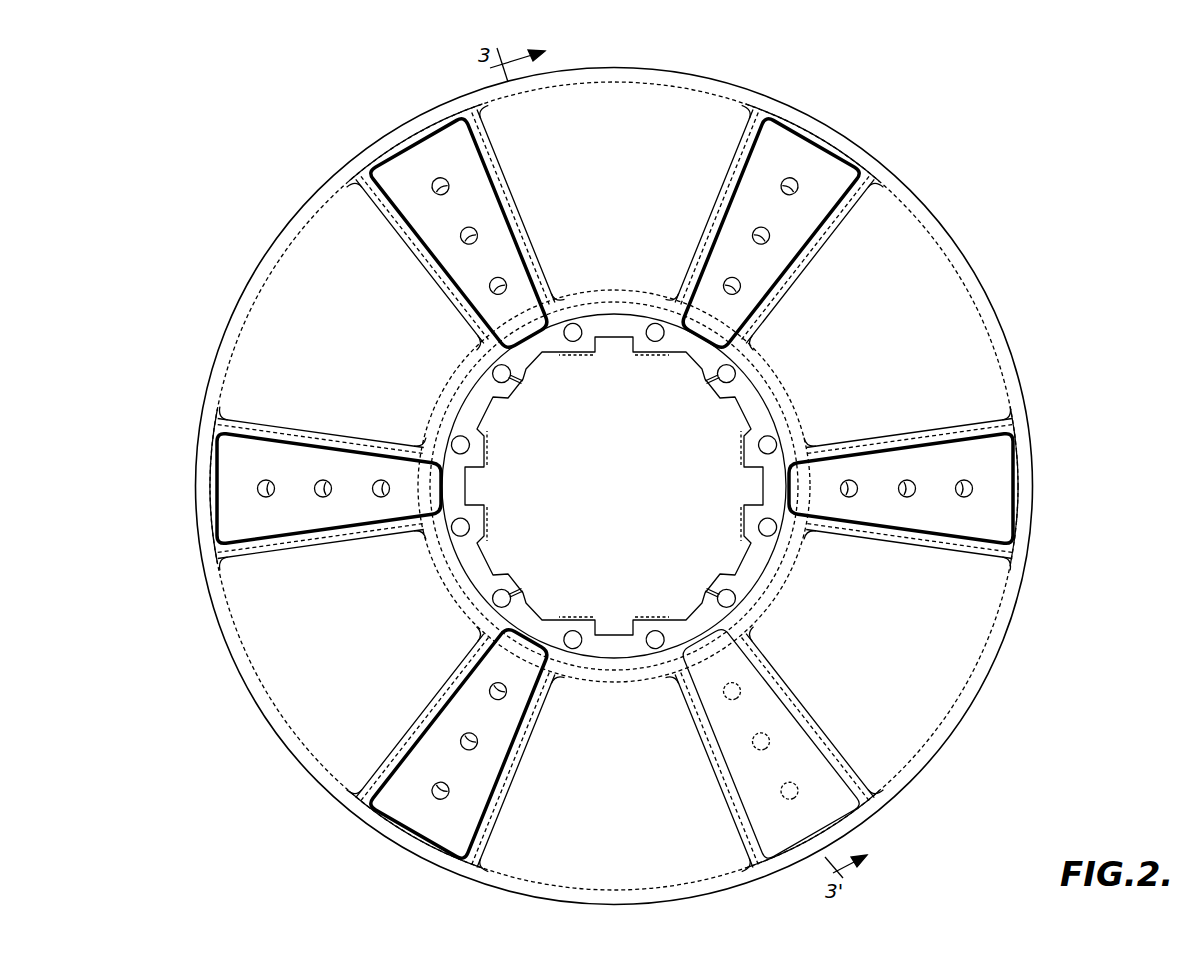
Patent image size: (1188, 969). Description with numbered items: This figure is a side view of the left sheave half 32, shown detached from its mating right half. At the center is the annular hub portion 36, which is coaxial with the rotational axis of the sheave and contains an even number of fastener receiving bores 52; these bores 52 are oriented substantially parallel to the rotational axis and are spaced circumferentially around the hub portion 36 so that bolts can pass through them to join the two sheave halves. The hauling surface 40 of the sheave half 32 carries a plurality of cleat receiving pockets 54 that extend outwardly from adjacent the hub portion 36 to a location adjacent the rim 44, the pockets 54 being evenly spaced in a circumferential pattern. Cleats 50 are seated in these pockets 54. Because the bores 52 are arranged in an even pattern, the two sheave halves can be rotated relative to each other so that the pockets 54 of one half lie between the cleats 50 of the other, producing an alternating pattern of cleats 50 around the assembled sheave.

The left sheave half 32 is at (934, 222).
The hub portion 36 is at (765, 414).
The hauling surface 40 is at (948, 353).
The rim 44 is at (1017, 400).
The cleat 50 is at (818, 818).
The fastener receiving bore 52 is at (524, 379).
The cleat receiving pocket 54 is at (370, 168).